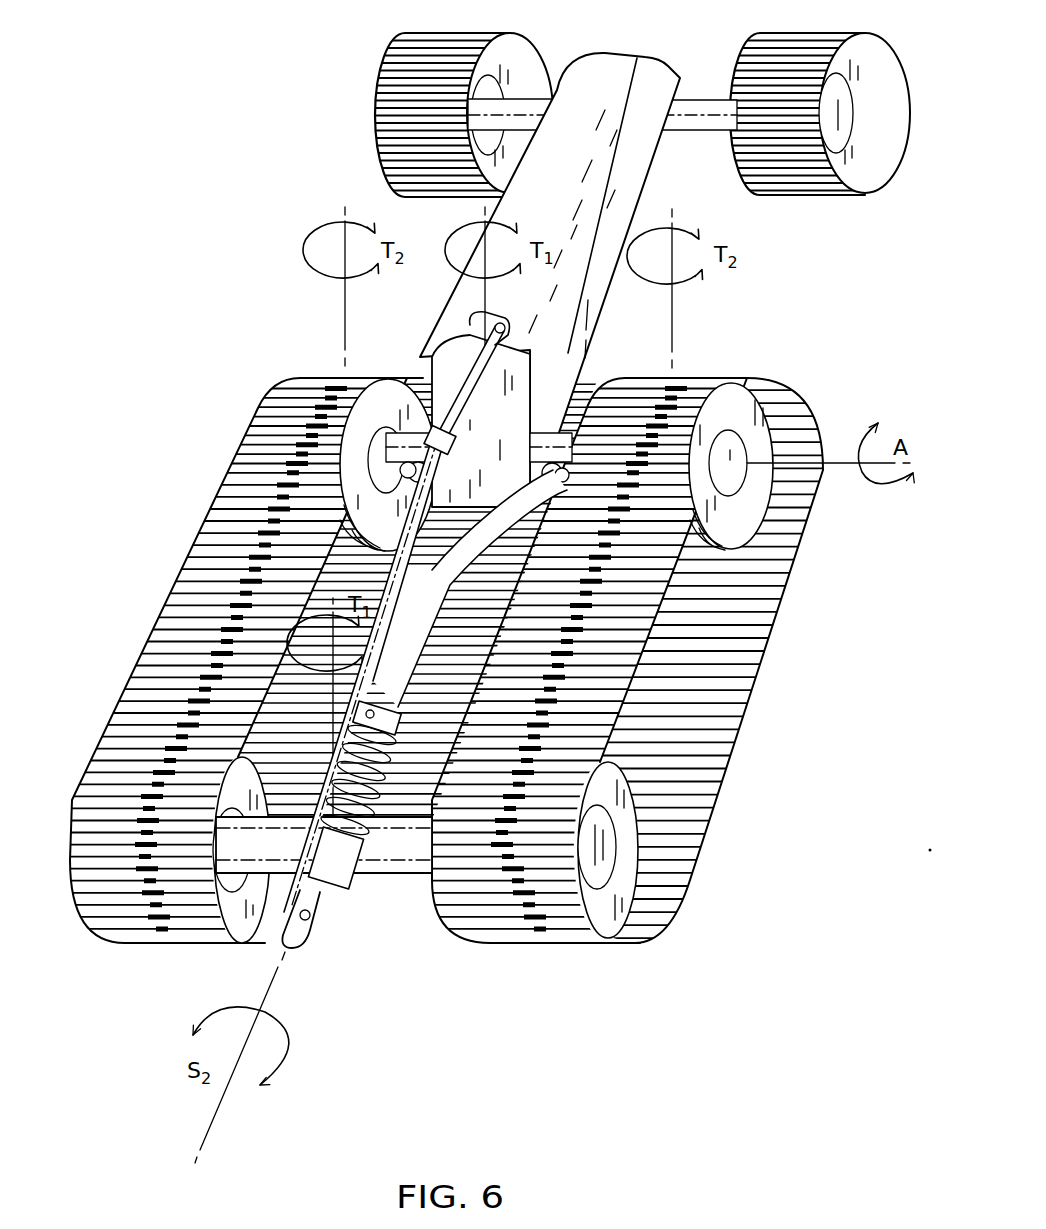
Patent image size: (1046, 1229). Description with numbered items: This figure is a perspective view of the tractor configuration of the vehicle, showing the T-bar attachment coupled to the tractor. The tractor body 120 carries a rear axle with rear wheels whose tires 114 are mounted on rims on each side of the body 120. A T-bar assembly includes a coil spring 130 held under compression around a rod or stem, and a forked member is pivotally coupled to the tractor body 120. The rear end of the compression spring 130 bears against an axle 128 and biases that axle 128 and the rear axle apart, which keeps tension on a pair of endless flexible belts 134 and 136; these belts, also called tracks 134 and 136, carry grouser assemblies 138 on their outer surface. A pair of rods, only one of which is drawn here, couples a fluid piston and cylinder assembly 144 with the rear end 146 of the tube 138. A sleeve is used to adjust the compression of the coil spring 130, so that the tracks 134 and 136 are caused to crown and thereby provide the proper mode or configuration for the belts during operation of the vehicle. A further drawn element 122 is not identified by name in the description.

The tire 114 is at (402, 392).
The tractor body 120 is at (578, 328).
The idler wheel 122 is at (245, 917).
The axle 128 is at (385, 858).
The coil spring 130 is at (389, 805).
The endless flexible belt 134 is at (137, 663).
The endless flexible belt 136 is at (708, 808).
The grouser assembly 138 is at (417, 663).
The fluid piston and cylinder assembly 144 is at (462, 412).
The rear end of tube 146 is at (320, 927).